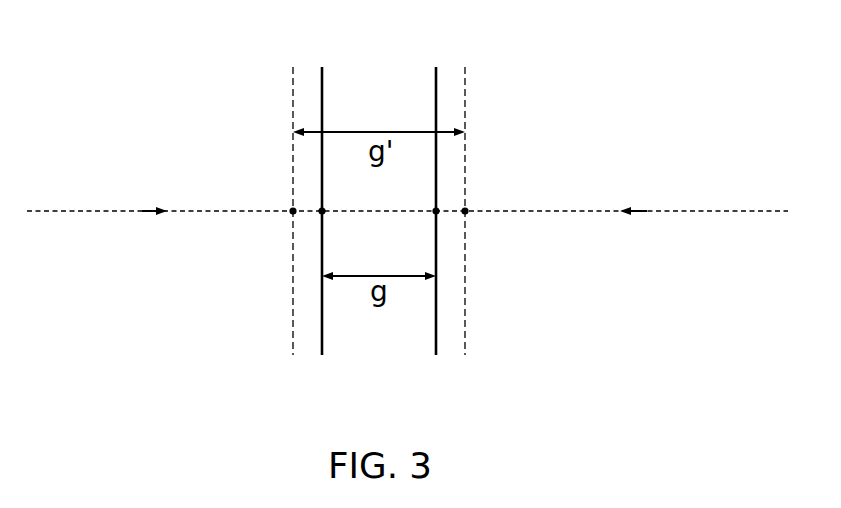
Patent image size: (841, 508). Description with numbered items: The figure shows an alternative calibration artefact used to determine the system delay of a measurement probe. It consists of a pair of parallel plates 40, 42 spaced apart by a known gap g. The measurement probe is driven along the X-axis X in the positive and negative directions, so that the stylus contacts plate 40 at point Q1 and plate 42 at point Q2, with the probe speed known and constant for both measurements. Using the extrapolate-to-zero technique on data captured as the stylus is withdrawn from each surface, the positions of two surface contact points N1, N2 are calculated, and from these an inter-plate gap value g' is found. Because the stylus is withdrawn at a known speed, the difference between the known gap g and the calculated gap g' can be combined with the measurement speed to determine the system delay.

The parallel plate 40 is at (322, 75).
The parallel plate 42 is at (436, 75).
The stylus contact point Q1 is at (322, 211).
The stylus contact point Q2 is at (436, 211).
The calculated surface contact point N1 is at (293, 211).
The calculated surface contact point N2 is at (465, 211).
The X-axis X is at (419, 212).